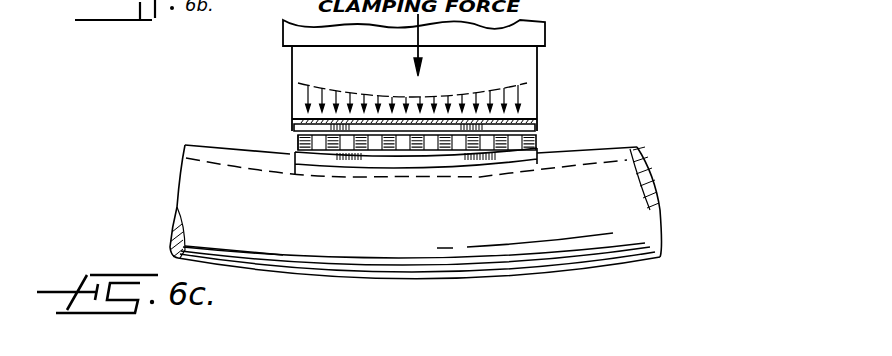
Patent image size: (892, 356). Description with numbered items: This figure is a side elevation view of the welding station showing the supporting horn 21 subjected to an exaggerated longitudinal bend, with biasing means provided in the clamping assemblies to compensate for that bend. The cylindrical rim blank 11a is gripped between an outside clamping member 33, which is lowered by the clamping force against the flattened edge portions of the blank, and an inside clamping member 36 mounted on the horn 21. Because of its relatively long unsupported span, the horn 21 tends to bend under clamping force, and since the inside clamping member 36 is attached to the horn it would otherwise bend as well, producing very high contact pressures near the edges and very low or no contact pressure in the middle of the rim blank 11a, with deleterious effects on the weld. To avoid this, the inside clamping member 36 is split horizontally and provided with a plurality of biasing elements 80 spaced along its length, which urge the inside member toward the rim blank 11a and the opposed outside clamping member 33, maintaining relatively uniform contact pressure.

The outside clamping member 33 is at (292, 74).
The cylindrical rim blank 11a is at (527, 122).
The inside clamping member 36 is at (296, 148).
The biasing element 80 is at (541, 136).
The horn 21 is at (657, 170).